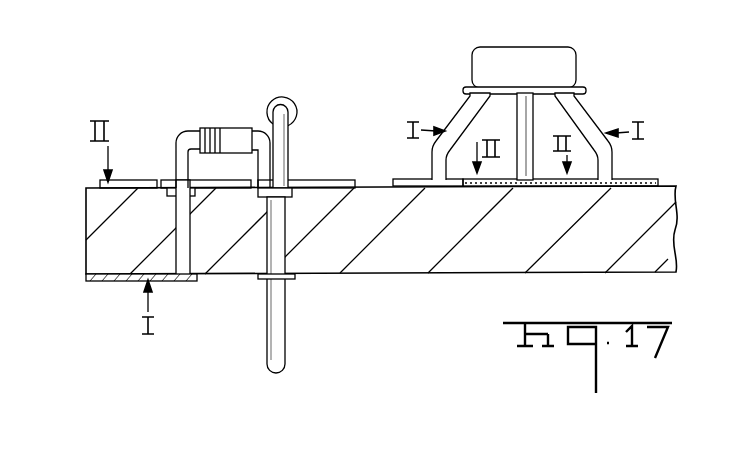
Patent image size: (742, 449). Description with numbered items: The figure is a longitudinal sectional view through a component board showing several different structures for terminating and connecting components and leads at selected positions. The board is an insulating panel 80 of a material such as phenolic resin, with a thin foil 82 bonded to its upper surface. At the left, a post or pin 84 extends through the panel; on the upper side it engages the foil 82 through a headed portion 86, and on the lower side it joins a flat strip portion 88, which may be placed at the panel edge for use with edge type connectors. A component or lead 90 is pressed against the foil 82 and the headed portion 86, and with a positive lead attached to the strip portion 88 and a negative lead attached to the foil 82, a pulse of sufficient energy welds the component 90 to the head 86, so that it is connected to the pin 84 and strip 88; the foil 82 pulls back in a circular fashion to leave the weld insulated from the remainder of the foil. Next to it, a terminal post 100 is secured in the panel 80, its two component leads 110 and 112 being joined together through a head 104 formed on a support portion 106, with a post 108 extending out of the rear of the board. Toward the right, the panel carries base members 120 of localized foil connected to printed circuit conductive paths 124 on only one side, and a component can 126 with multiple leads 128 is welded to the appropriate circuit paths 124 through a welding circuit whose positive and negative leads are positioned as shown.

The insulating board 80 is at (84, 248).
The thin foil 82 is at (130, 180).
The post or pin 84 is at (186, 250).
The headed portion 86 is at (165, 194).
The flat strip portion 88 is at (118, 281).
The component or lead 90 is at (180, 148).
The terminal post 100 is at (262, 349).
The head 104 is at (290, 193).
The support portion 106 is at (280, 252).
The post 108 is at (287, 343).
The component lead 110 is at (288, 143).
The component lead 112 is at (262, 163).
The base member 120 is at (528, 187).
The printed circuit conductive path 124 is at (404, 180).
The component can 126 is at (547, 53).
The leads 128 is at (465, 122).